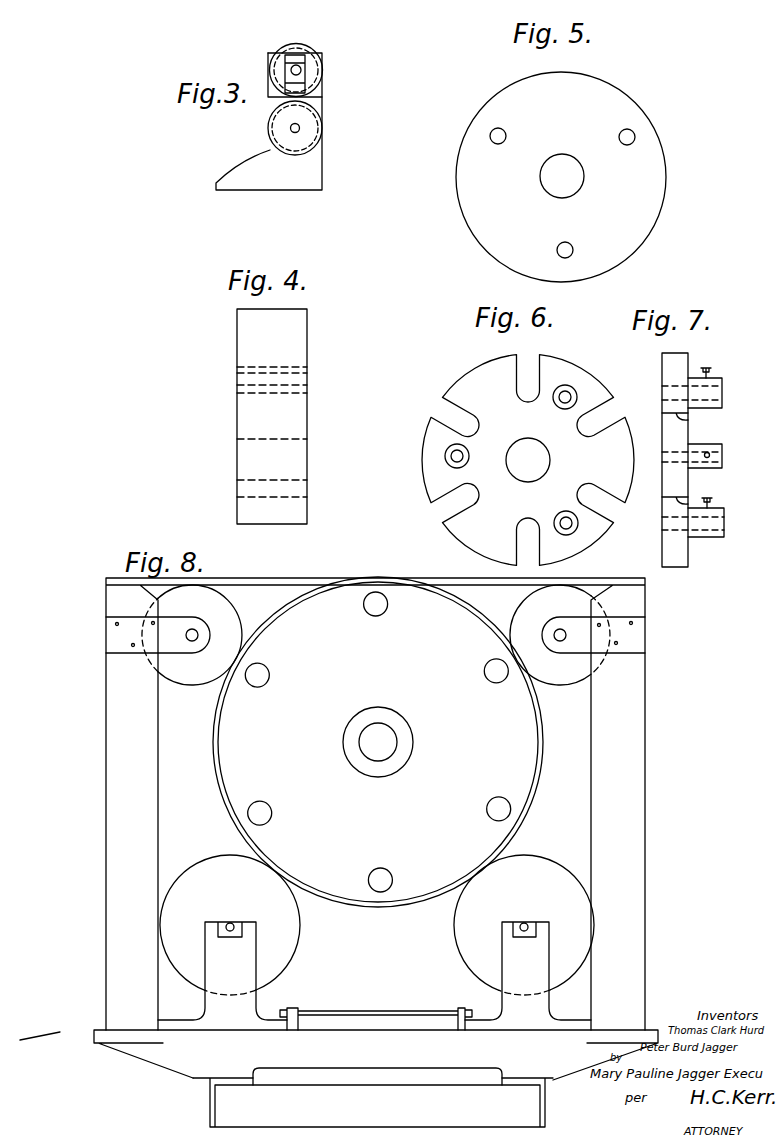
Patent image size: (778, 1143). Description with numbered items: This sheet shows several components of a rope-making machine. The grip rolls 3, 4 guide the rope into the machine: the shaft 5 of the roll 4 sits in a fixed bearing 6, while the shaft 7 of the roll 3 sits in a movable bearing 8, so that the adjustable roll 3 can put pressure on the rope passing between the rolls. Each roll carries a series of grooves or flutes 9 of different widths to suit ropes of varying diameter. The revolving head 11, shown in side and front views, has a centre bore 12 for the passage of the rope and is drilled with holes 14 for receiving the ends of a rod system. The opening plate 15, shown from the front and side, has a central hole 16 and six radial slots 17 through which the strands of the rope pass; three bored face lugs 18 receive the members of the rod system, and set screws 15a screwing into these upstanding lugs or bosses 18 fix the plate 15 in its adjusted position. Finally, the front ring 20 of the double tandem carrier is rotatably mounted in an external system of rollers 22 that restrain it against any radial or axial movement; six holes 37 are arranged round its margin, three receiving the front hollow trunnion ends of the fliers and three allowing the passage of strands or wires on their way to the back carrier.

In FIG. 3, the grip roll 3 is at (323, 73).
In FIG. 3, the grip roll 4 is at (321, 128).
In FIG. 3, the shaft 5 is at (290, 129).
In FIG. 3, the fixed bearing 6 is at (322, 157).
In FIG. 3, the shaft 7 is at (302, 68).
In FIG. 3, the movable bearing 8 is at (270, 62).
In FIG. 3, the grooves or flutes 9 is at (293, 46).
In FIG. 4, the revolving head 11 is at (307, 416).
In FIG. 5, the revolving head 11 is at (663, 181).
In FIG. 4, the centre bore 12 is at (252, 444).
In FIG. 5, the centre bore 12 is at (584, 176).
In FIG. 4, the holes 14 is at (307, 370).
In FIG. 5, the holes 14 is at (506, 135).
In FIG. 6, the opening plate 15 is at (627, 422).
In FIG. 7, the opening plate 15 is at (662, 379).
In FIG. 7, the set screws 15a is at (735, 501).
In FIG. 6, the central hole 16 is at (550, 460).
In FIG. 6, the radial slots 17 is at (514, 378).
In FIG. 7, the radial slots 17 is at (688, 420).
In FIG. 6, the bored face lugs 18 is at (469, 455).
In FIG. 7, the bored face lugs 18 is at (715, 378).
In FIG. 8, the front ring 20 is at (237, 768).
In FIG. 8, the rollers 22 is at (196, 679).
In FIG. 8, the holes 37 is at (318, 652).